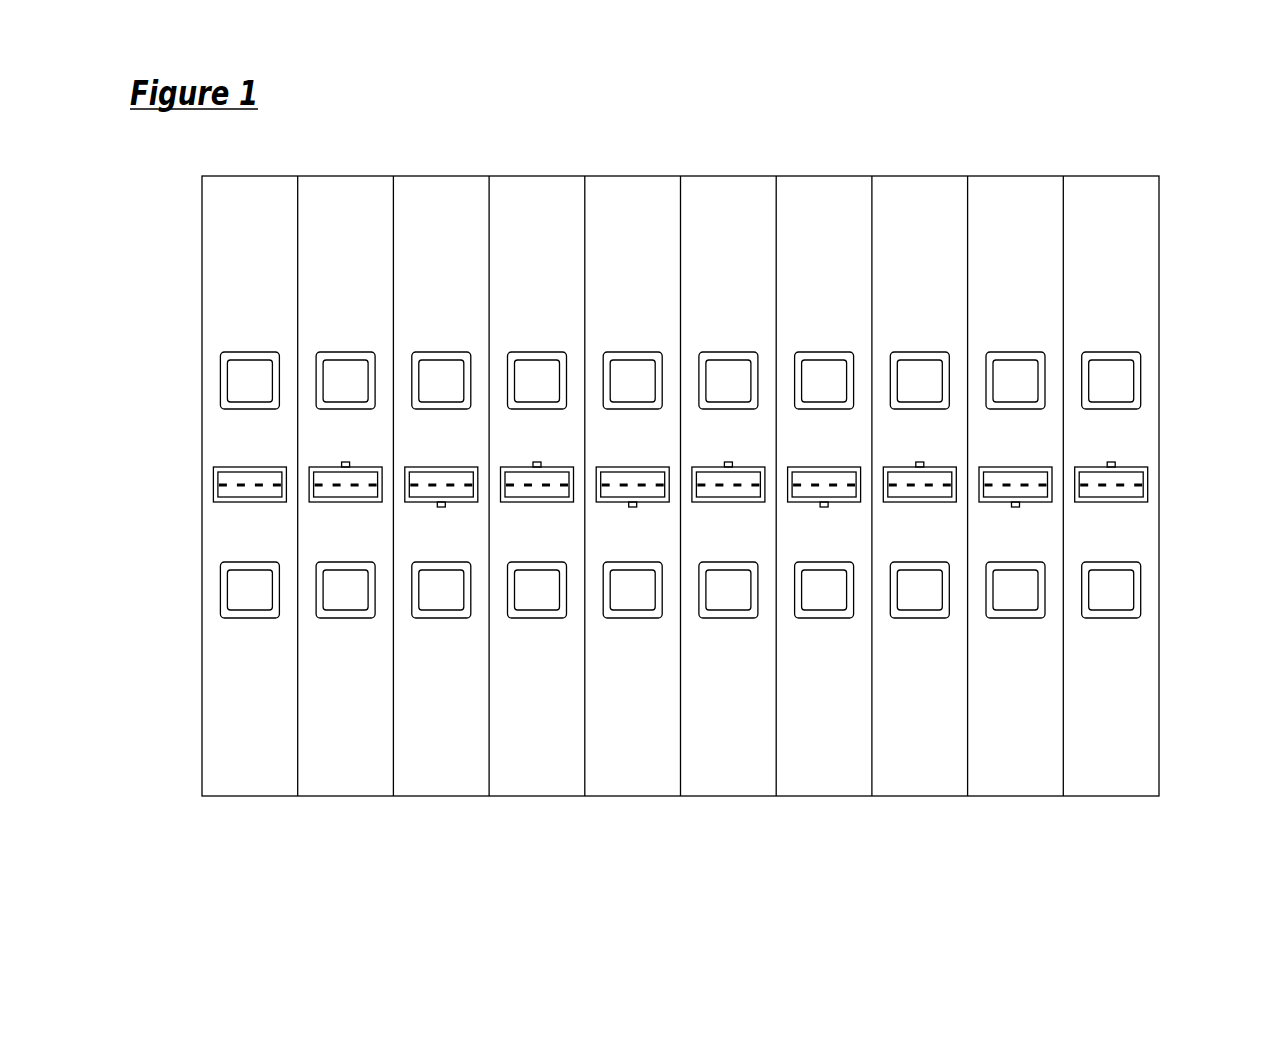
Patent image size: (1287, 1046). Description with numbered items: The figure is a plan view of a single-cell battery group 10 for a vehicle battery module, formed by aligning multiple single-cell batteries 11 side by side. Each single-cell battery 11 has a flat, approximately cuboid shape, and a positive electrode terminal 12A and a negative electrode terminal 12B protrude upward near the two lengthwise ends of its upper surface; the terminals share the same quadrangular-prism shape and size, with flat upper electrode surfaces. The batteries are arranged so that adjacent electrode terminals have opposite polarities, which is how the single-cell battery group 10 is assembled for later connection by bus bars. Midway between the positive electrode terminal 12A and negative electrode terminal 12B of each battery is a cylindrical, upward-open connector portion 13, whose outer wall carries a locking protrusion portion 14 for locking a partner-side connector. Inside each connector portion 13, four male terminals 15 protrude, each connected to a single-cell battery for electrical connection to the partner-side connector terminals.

The single-cell battery group 10 is at (1098, 157).
The single-cell battery 11 is at (442, 773).
The positive electrode terminal 12A is at (1117, 380).
The negative electrode terminal 12B is at (1014, 366).
The connector portion 13 is at (229, 478).
The locking protrusion portion 14 is at (1112, 462).
The male terminal 15 is at (277, 489).